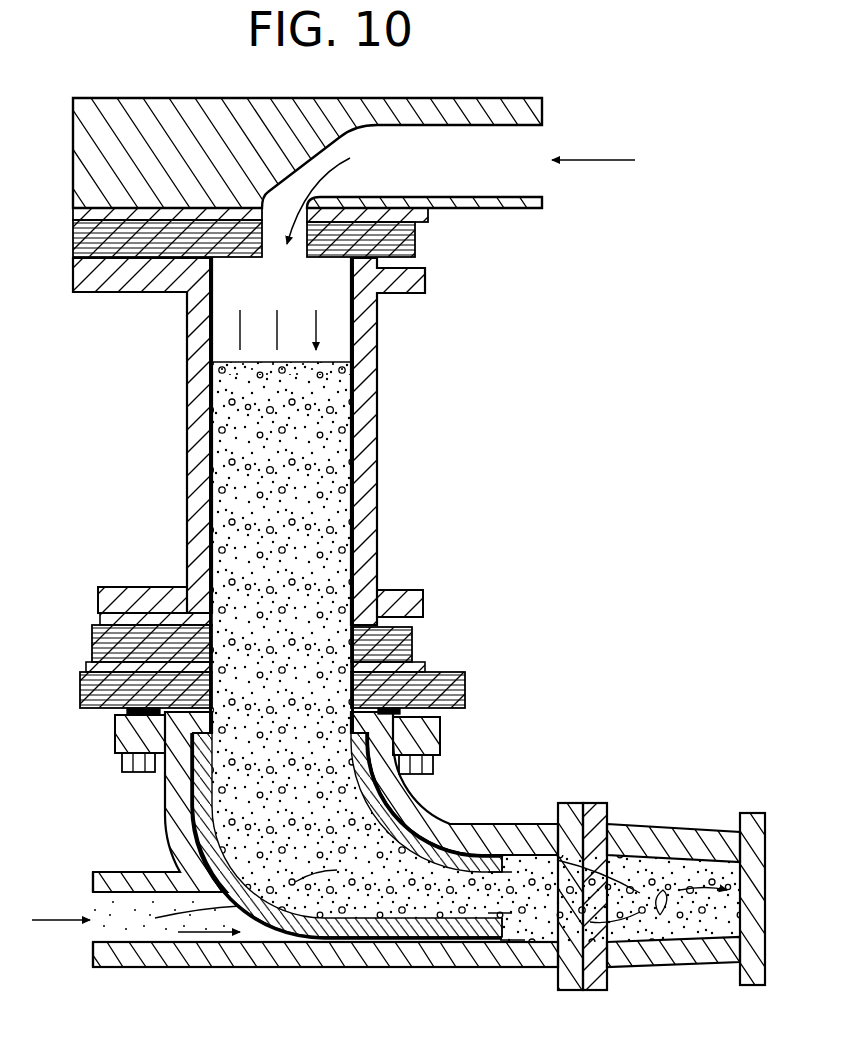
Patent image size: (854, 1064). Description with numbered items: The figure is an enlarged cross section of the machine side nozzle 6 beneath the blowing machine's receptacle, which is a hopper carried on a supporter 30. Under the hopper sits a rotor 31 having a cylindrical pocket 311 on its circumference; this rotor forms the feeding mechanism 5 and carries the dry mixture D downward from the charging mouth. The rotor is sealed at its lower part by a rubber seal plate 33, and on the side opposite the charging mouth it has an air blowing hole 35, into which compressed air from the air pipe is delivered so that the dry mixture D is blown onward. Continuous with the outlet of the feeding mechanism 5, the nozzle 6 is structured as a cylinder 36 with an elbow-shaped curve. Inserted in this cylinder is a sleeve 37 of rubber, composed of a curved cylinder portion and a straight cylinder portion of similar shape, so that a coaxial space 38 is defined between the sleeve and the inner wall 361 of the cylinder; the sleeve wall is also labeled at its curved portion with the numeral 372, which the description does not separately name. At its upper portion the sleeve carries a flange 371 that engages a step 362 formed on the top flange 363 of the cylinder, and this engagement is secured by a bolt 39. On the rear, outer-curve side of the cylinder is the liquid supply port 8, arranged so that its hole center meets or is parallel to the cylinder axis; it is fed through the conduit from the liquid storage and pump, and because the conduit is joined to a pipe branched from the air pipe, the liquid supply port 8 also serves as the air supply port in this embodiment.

The supporter 30 is at (152, 98).
The air blowing hole 35 is at (477, 172).
The feeding mechanism 5 is at (385, 365).
The rotor 31 is at (379, 406).
The cylindrical pocket 311 is at (342, 447).
The dry mixture D is at (228, 479).
The rubber seal plate 33 is at (413, 638).
The sleeve 37 is at (369, 930).
The flange 371 is at (183, 735).
The gas permeable lining portion 372 is at (282, 895).
The coaxial space 38 is at (404, 943).
The liquid supply port 8 is at (133, 872).
The cylinder 36 is at (478, 962).
The inner wall 361 is at (445, 844).
The machine side nozzle 6 is at (461, 820).
The step 362 is at (440, 722).
The top flange 363 is at (125, 735).
The bolt 39 is at (125, 770).